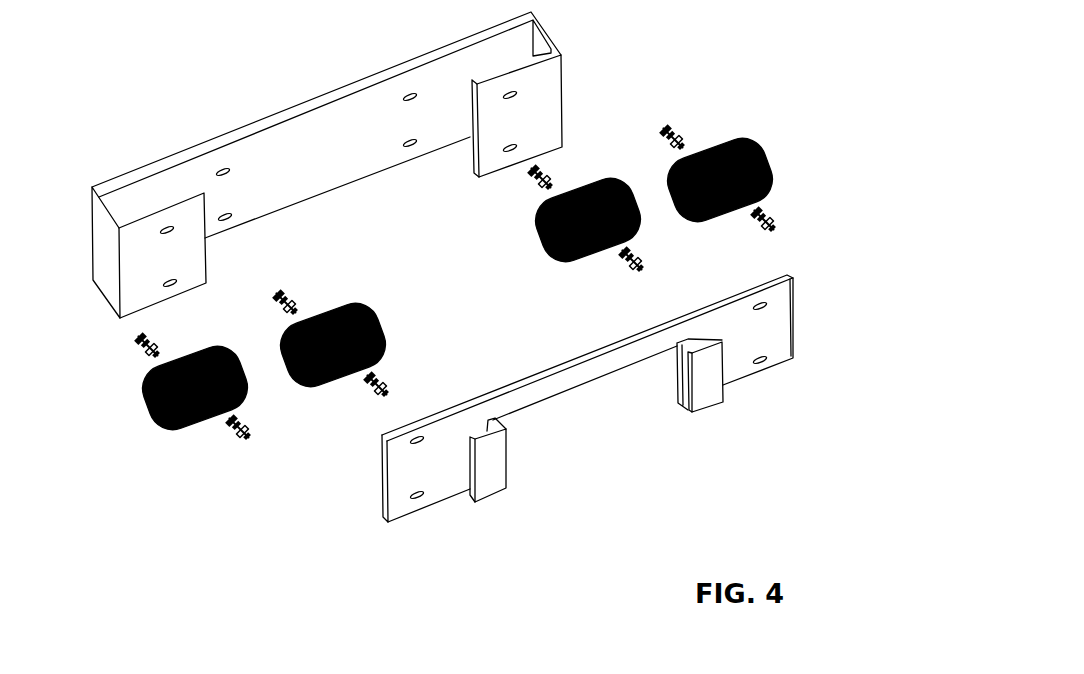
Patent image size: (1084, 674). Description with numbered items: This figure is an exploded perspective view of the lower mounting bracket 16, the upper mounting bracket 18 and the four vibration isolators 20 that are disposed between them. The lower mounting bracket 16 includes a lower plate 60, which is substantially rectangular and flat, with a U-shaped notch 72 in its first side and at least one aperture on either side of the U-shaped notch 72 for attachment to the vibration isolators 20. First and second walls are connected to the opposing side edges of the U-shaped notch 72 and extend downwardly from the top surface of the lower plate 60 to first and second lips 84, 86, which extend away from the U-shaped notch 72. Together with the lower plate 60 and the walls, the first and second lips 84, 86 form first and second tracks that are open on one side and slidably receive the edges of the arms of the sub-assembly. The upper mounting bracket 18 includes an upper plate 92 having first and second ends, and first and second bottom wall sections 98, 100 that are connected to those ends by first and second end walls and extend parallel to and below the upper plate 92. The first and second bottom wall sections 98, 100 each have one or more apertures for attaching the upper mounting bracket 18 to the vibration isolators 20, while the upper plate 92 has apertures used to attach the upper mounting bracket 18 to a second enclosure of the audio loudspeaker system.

The lower mounting bracket 16 is at (632, 384).
The upper mounting bracket 18 is at (382, 163).
The vibration isolators 20 is at (757, 152).
The lower plate 60 is at (447, 485).
The U-shaped notch 72 is at (587, 407).
The first lip 84 is at (492, 482).
The second lip 86 is at (713, 397).
The upper plate 92 is at (272, 115).
The first bottom wall section 98 is at (180, 257).
The second bottom wall section 100 is at (498, 128).